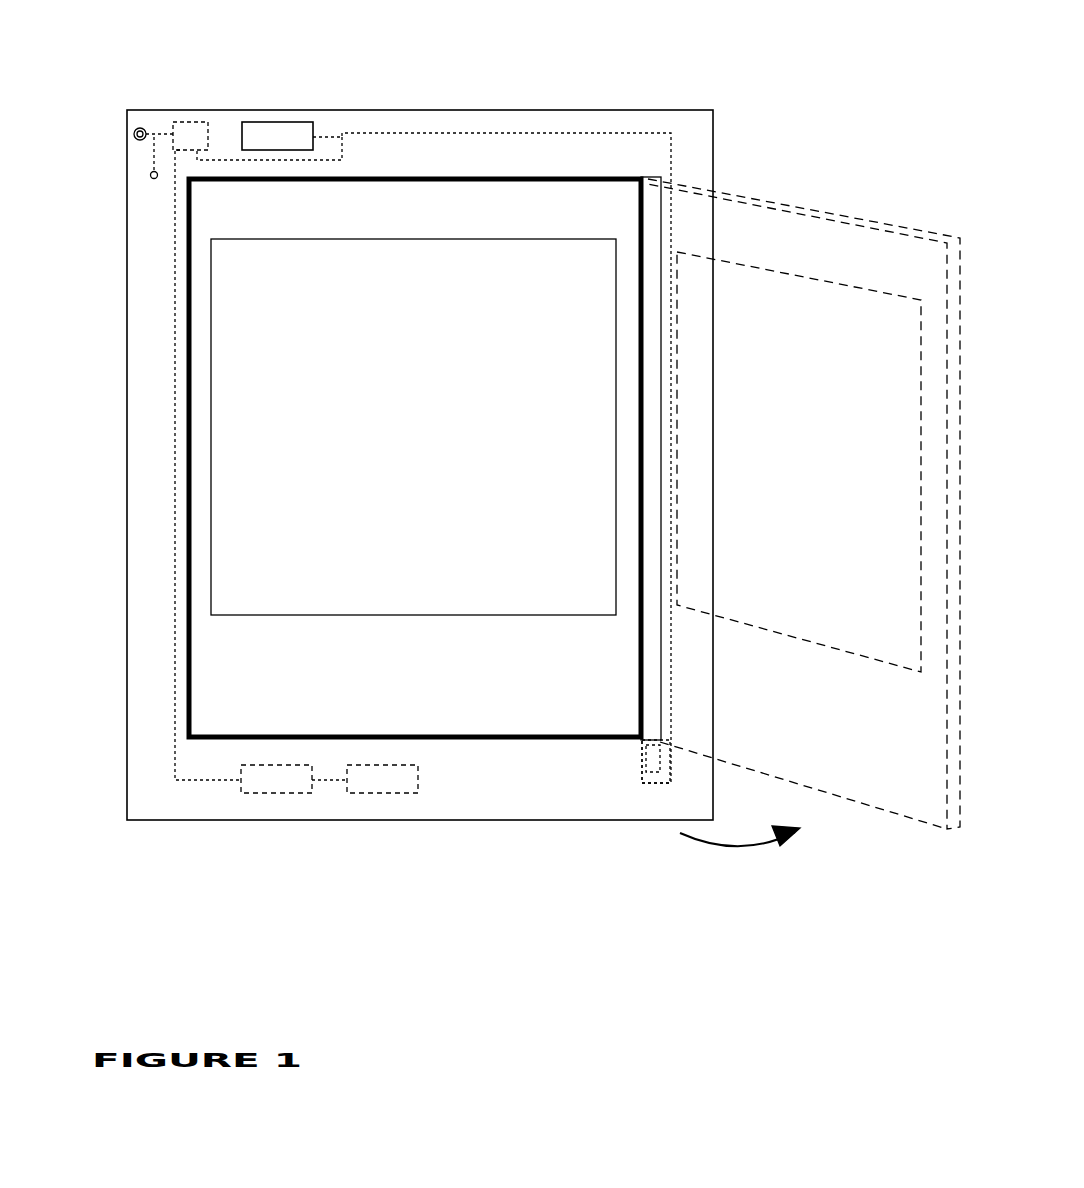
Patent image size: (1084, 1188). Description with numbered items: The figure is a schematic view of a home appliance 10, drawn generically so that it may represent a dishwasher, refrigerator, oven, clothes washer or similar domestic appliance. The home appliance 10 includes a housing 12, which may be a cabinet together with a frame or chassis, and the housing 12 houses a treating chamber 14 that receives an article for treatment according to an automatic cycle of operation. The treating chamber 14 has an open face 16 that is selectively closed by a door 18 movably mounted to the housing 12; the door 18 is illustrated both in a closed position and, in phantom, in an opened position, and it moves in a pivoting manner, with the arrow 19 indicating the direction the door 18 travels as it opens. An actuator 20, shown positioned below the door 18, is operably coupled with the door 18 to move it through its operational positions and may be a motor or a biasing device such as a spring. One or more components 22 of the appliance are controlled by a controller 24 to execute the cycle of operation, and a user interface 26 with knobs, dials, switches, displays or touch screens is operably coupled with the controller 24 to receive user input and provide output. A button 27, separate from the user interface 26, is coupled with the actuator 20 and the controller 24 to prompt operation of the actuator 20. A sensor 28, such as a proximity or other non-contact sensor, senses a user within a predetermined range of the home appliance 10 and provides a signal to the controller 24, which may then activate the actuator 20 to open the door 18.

The home appliance 10 is at (137, 29).
The housing 12 is at (581, 110).
The treating chamber 14 is at (367, 344).
The open face 16 is at (460, 617).
The door 18 is at (515, 740).
The arrow 19 is at (733, 848).
The actuator 20 is at (642, 755).
The components 22 is at (362, 793).
The controller 24 is at (200, 120).
The user interface 26 is at (278, 121).
The button 27 is at (131, 130).
The sensor 28 is at (150, 175).